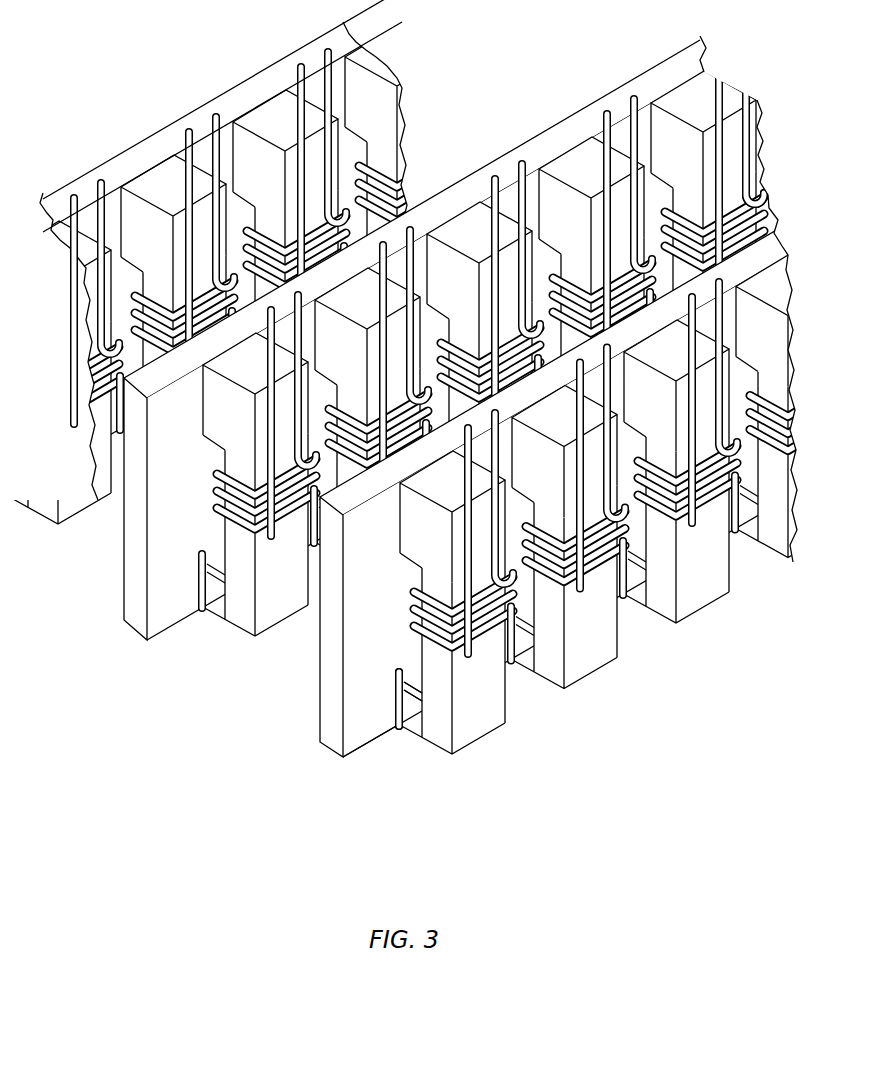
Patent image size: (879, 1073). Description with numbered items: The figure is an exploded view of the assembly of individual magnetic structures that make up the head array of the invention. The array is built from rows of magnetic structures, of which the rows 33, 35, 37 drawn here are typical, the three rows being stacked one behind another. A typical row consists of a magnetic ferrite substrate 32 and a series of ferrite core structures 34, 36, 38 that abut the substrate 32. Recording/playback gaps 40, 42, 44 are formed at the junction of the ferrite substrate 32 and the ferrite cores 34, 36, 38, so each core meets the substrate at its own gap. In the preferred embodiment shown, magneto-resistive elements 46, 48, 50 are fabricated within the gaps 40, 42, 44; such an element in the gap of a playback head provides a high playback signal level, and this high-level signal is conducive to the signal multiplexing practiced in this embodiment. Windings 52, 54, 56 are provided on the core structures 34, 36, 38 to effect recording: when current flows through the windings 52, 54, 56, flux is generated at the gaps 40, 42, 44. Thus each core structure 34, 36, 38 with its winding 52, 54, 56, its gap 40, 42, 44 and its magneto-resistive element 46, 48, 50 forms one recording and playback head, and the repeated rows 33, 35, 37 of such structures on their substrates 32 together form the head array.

The magnetic ferrite substrate 32 is at (326, 668).
The row 33 is at (788, 243).
The ferrite core structure 34 is at (461, 608).
The row 35 is at (757, 65).
The ferrite core structure 36 is at (598, 543).
The row 37 is at (387, 50).
The ferrite core structure 38 is at (703, 473).
The recording/playback gap 40 is at (402, 728).
The recording/playback gap 42 is at (517, 663).
The recording/playback gap 44 is at (627, 597).
The magneto-resistive element 46 is at (392, 688).
The magneto-resistive element 48 is at (520, 613).
The magneto-resistive element 50 is at (642, 557).
The winding 52 is at (458, 481).
The winding 54 is at (570, 413).
The winding 56 is at (676, 350).